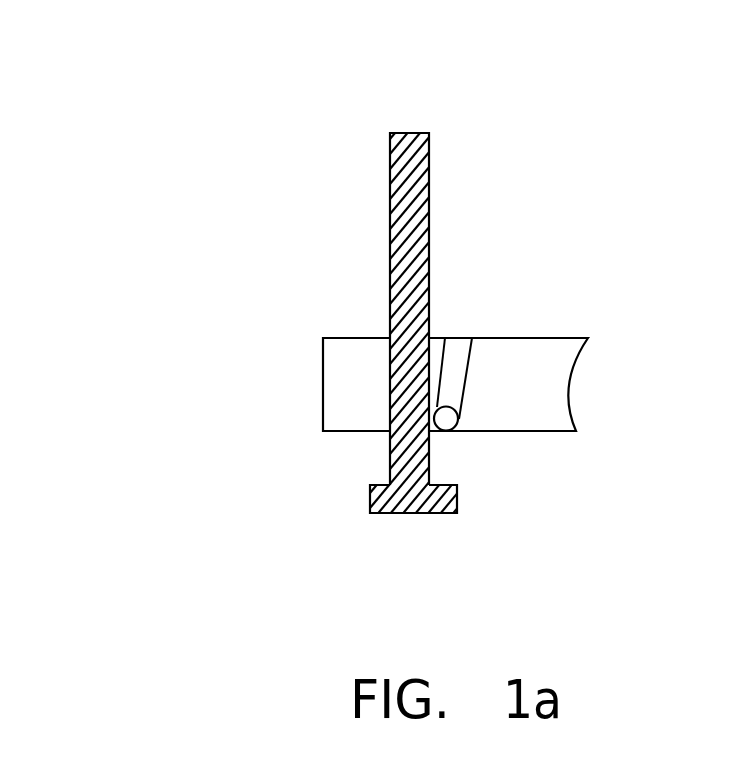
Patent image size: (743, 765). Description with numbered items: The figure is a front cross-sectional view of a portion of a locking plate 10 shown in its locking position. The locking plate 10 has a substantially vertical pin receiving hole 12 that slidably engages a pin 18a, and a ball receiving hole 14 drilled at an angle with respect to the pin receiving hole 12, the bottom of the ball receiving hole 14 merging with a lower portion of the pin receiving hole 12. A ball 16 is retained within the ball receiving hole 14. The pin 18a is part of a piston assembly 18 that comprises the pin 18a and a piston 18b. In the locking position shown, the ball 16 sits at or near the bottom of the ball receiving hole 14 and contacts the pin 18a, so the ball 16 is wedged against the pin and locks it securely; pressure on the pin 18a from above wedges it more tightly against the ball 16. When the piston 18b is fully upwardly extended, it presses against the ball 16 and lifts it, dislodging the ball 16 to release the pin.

The locking plate 10 is at (287, 473).
The pin receiving hole 12 is at (390, 382).
The ball receiving hole 14 is at (462, 348).
The ball 16 is at (458, 412).
The piston assembly 18 is at (460, 319).
The pin 18a is at (389, 190).
The piston 18b is at (392, 513).